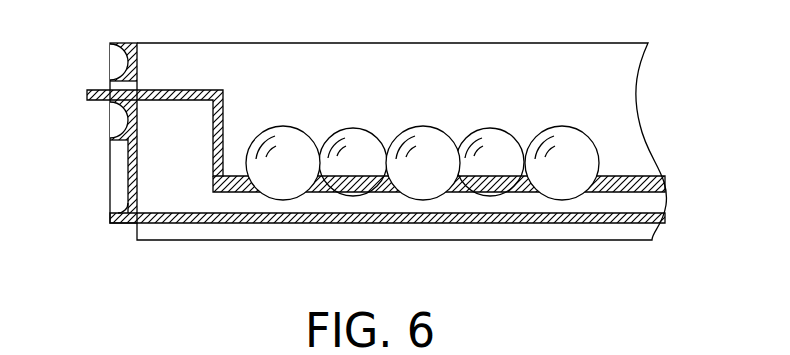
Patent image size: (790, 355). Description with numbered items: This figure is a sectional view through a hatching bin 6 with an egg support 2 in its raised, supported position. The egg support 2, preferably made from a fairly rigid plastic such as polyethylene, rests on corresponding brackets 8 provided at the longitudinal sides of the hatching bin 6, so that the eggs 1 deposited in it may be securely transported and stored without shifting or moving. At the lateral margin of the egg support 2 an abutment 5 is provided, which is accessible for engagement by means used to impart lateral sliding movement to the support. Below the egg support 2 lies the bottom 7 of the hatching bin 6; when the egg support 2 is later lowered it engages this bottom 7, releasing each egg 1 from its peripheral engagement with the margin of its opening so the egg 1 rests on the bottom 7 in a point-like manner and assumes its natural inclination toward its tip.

The egg 1 is at (565, 150).
The egg support 2 is at (640, 177).
The abutment 5 is at (108, 101).
The hatching bin 6 is at (177, 182).
The bottom 7 is at (421, 217).
The bracket 8 is at (592, 156).